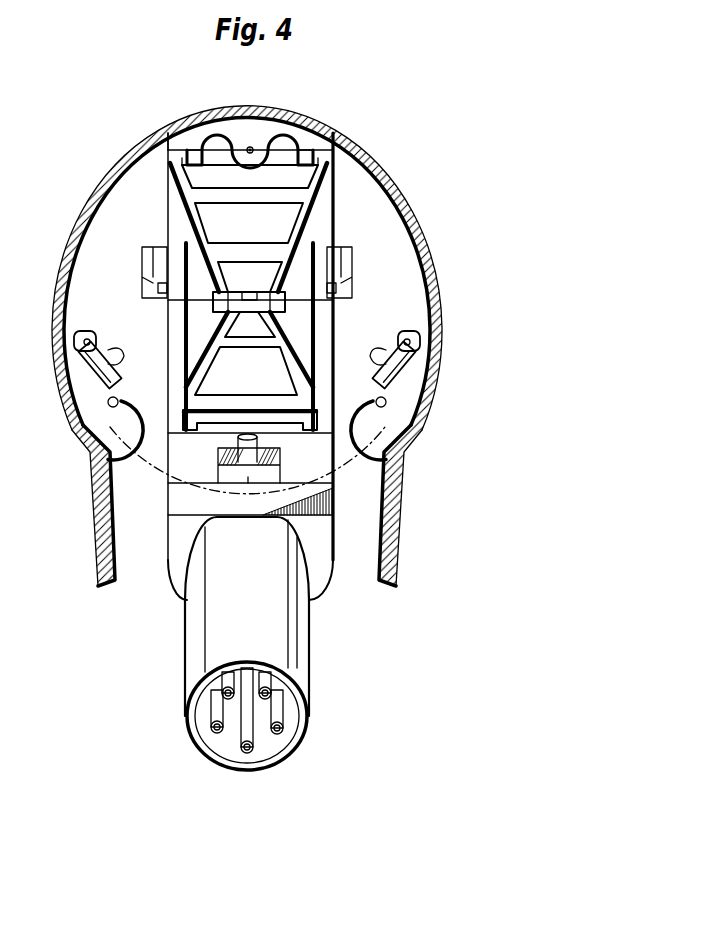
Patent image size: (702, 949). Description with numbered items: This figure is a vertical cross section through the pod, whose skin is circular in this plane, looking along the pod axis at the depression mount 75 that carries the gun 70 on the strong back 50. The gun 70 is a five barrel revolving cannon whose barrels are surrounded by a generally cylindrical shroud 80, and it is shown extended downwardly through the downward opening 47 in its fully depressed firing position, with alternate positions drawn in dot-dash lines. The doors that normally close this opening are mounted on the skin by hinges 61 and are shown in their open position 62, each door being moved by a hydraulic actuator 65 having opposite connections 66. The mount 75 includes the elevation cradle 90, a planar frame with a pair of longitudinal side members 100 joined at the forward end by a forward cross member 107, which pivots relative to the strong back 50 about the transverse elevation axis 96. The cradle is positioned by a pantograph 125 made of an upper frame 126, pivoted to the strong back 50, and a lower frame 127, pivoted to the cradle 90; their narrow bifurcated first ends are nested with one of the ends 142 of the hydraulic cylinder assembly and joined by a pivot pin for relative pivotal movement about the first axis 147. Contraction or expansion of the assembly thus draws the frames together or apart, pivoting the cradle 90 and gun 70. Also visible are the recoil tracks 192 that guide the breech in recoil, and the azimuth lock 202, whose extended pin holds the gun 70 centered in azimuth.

The strong back 50 is at (288, 118).
The open position of the doors 62 is at (402, 517).
The elevation axis 96 is at (200, 120).
The elevation cradle 90 is at (340, 200).
The longitudinal side members 100 is at (168, 336).
The depression mount 75 is at (350, 224).
The upper frame 126 is at (257, 212).
The ends of the hydraulic cylinder assembly 142 is at (258, 276).
The pantograph 125 is at (300, 313).
The first axis 147 is at (195, 302).
The lower frame 127 is at (288, 372).
The recoil tracks 192 is at (147, 256).
The hydraulic actuator 65 is at (80, 383).
The connections 66 is at (127, 351).
The hinges 61 is at (130, 410).
The downward opening 47 is at (153, 463).
The azimuth lock 202 is at (222, 453).
The forward cross member 107 is at (330, 490).
The shroud 80 is at (259, 600).
The gun 70 is at (324, 658).